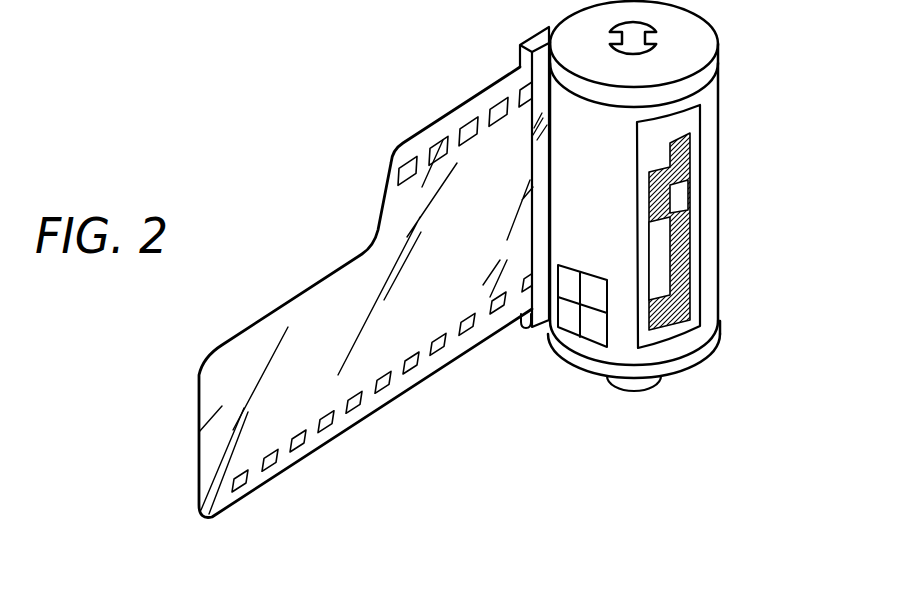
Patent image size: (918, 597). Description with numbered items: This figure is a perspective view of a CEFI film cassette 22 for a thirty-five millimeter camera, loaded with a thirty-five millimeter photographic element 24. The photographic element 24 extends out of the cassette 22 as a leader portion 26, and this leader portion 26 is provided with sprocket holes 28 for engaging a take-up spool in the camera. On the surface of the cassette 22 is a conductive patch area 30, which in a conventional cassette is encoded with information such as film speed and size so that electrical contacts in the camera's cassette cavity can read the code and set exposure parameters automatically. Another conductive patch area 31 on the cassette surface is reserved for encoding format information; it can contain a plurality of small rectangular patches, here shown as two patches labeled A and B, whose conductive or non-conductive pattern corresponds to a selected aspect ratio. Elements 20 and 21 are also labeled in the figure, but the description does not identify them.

The camera 20 is at (89, 0).
The camera body 21 is at (262, 0).
The CEFI film cassette 22 is at (745, 192).
The photographic element 24 is at (392, 400).
The leader portion 26 is at (199, 432).
The sprocket holes 28 is at (431, 148).
The conductive patch area 30 is at (690, 124).
The conductive patch area 31 is at (573, 262).